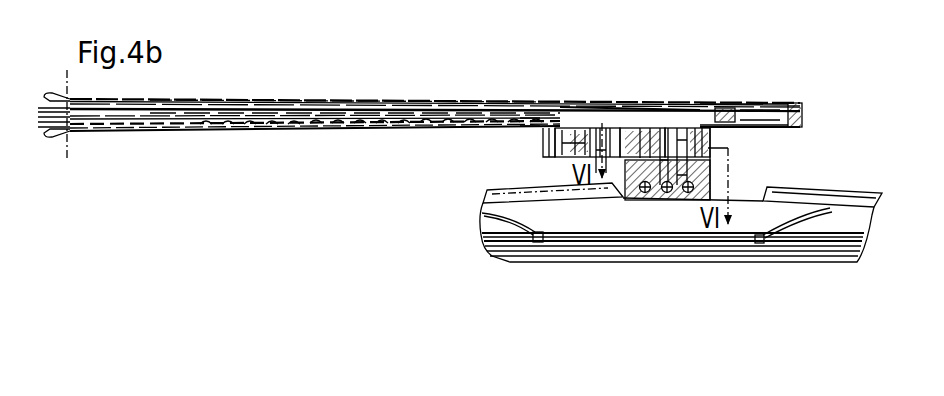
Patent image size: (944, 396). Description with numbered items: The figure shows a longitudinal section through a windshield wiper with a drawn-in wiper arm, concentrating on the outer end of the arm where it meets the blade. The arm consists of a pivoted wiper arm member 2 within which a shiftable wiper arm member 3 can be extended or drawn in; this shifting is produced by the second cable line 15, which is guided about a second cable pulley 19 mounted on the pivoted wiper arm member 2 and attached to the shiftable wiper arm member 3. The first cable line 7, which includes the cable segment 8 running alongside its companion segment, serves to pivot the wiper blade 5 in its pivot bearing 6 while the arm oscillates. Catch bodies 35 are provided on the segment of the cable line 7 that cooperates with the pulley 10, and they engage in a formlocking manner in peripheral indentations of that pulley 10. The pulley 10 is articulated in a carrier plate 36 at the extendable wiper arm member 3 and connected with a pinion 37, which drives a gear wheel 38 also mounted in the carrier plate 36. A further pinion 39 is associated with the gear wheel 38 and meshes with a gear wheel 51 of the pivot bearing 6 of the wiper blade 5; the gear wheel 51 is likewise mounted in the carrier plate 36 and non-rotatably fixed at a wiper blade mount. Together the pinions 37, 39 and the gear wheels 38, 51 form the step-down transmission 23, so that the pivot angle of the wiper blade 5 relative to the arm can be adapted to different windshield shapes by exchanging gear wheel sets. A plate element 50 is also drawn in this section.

The pivoted wiper arm member 2 is at (122, 108).
The shiftable wiper arm member 3 is at (802, 117).
The wiper blade 5 is at (750, 192).
The pivot bearing 6 is at (673, 130).
The first cable line 7 is at (361, 129).
The cable segment 8 is at (438, 127).
The pulley 10 is at (537, 131).
The second cable line 15 is at (272, 100).
The second cable pulley 19 is at (747, 120).
The step-down transmission 23 is at (613, 100).
The catch bodies 35 is at (287, 129).
The carrier plate 36 is at (585, 128).
The pinion 37 is at (556, 150).
The gear wheel 38 is at (598, 130).
The pinion 39 is at (628, 128).
The mounting plate 50 is at (700, 176).
The gear wheel 51 is at (650, 130).